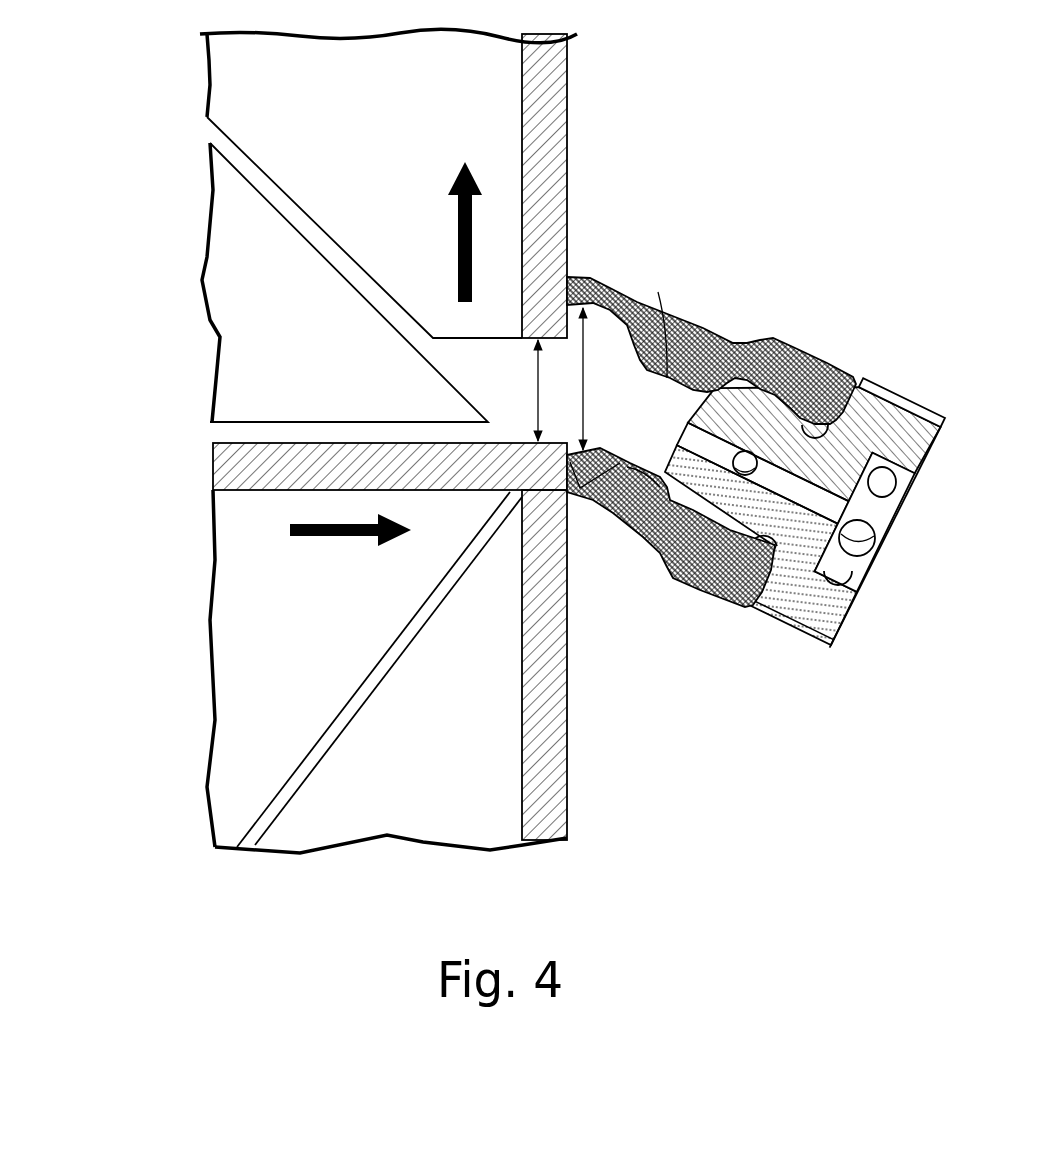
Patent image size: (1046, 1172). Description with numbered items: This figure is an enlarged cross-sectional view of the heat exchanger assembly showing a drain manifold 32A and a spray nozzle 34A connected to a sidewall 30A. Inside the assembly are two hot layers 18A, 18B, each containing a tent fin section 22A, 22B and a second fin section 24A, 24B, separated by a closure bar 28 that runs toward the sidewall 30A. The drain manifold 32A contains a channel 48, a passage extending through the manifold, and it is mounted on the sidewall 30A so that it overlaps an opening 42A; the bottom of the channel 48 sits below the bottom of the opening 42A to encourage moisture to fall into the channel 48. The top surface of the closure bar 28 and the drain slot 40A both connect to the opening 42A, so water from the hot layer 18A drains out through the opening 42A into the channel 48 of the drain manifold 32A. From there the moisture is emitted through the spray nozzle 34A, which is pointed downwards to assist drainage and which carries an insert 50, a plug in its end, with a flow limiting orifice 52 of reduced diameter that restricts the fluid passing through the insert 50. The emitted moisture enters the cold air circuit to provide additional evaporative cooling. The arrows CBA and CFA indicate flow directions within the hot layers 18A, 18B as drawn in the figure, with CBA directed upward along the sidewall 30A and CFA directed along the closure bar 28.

The hot layer 18A is at (315, 225).
The hot layer 18B is at (310, 671).
The tent fin section 22A is at (299, 379).
The tent fin section 22B is at (298, 677).
The second fin section 24A is at (408, 124).
The second fin section 24B is at (483, 784).
The closure bar 28 is at (247, 492).
The sidewall 30A is at (569, 93).
The drain manifold 32A is at (711, 285).
The spray nozzle 34A is at (703, 326).
The drain slot 40A is at (258, 152).
The opening 42A is at (540, 387).
The channel 48 is at (586, 357).
The insert 50 is at (805, 496).
The flow limiting orifice 52 is at (806, 506).
The first flow direction CBA is at (473, 220).
The second flow direction CFA is at (335, 537).